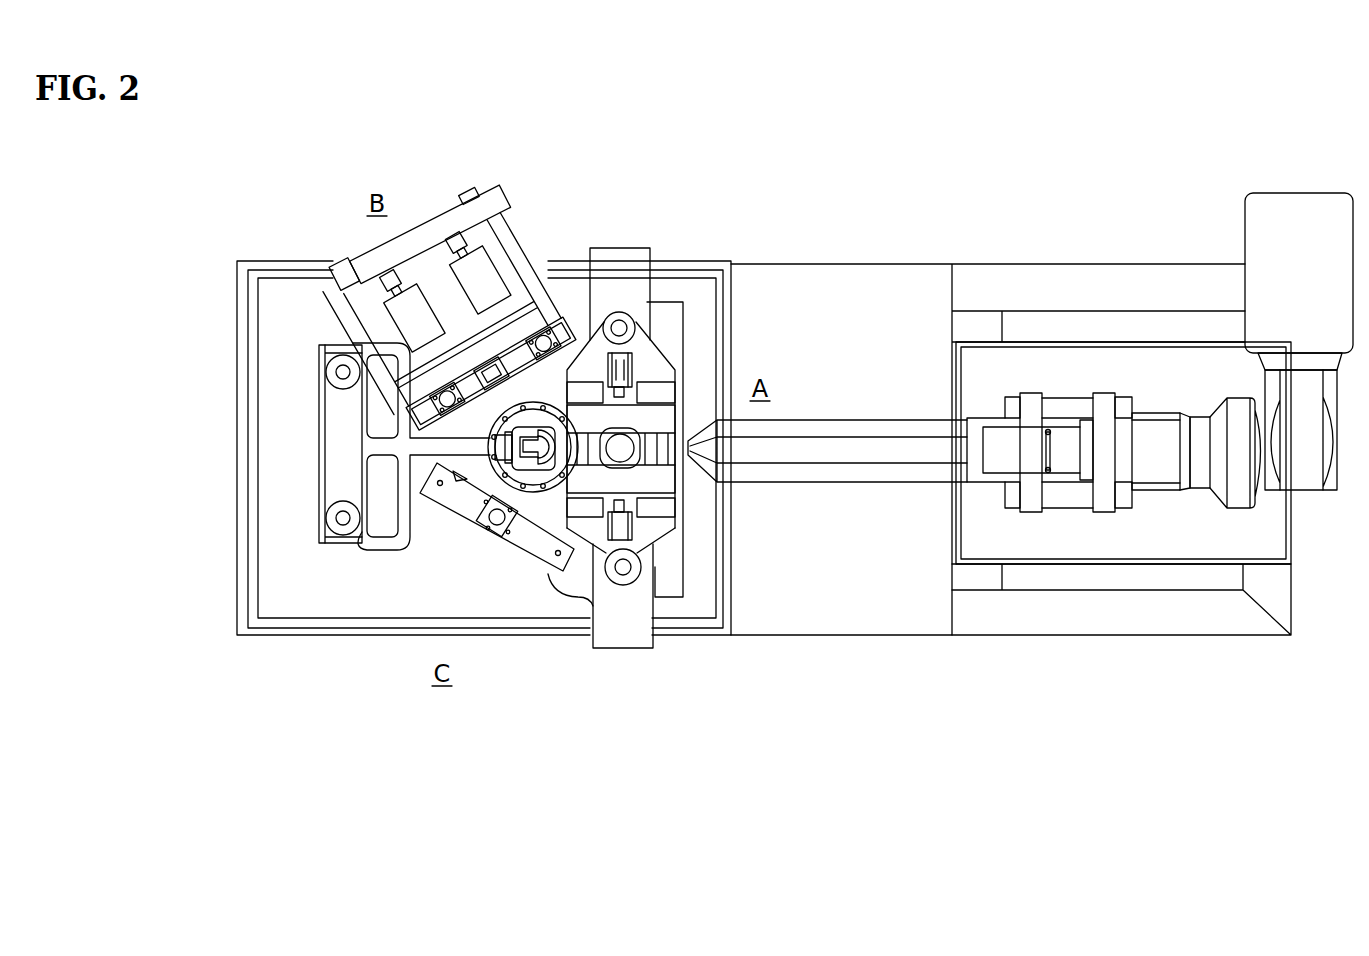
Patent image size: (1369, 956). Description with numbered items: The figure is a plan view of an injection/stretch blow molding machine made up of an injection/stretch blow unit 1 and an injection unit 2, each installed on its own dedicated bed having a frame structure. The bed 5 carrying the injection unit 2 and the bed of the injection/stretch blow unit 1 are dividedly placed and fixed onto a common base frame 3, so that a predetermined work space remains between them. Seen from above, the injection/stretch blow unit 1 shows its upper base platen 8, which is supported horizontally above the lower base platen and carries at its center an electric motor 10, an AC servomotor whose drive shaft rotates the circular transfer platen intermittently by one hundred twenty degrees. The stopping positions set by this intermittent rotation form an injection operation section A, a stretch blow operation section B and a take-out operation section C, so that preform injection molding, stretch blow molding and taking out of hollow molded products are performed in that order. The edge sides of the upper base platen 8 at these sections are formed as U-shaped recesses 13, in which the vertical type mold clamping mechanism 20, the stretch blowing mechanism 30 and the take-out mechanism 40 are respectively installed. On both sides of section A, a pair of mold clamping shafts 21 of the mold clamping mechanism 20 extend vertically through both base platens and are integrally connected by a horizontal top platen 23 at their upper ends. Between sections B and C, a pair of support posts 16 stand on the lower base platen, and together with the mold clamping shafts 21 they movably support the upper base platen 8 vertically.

The injection/stretch blow unit 1 is at (332, 245).
The injection unit 2 is at (1073, 388).
The common base frame 3 is at (808, 635).
The bed 5 is at (1124, 582).
The upper base platen 8 is at (380, 418).
The electric motor 10 is at (538, 452).
The U-shaped recess 13 is at (484, 565).
The support posts 16 is at (343, 372).
The vertical type mold clamping mechanism 20 is at (698, 510).
The mold clamping shafts 21 is at (619, 328).
The top platen 23 is at (647, 547).
The stretch blowing mechanism 30 is at (555, 305).
The take-out mechanism 40 is at (476, 538).